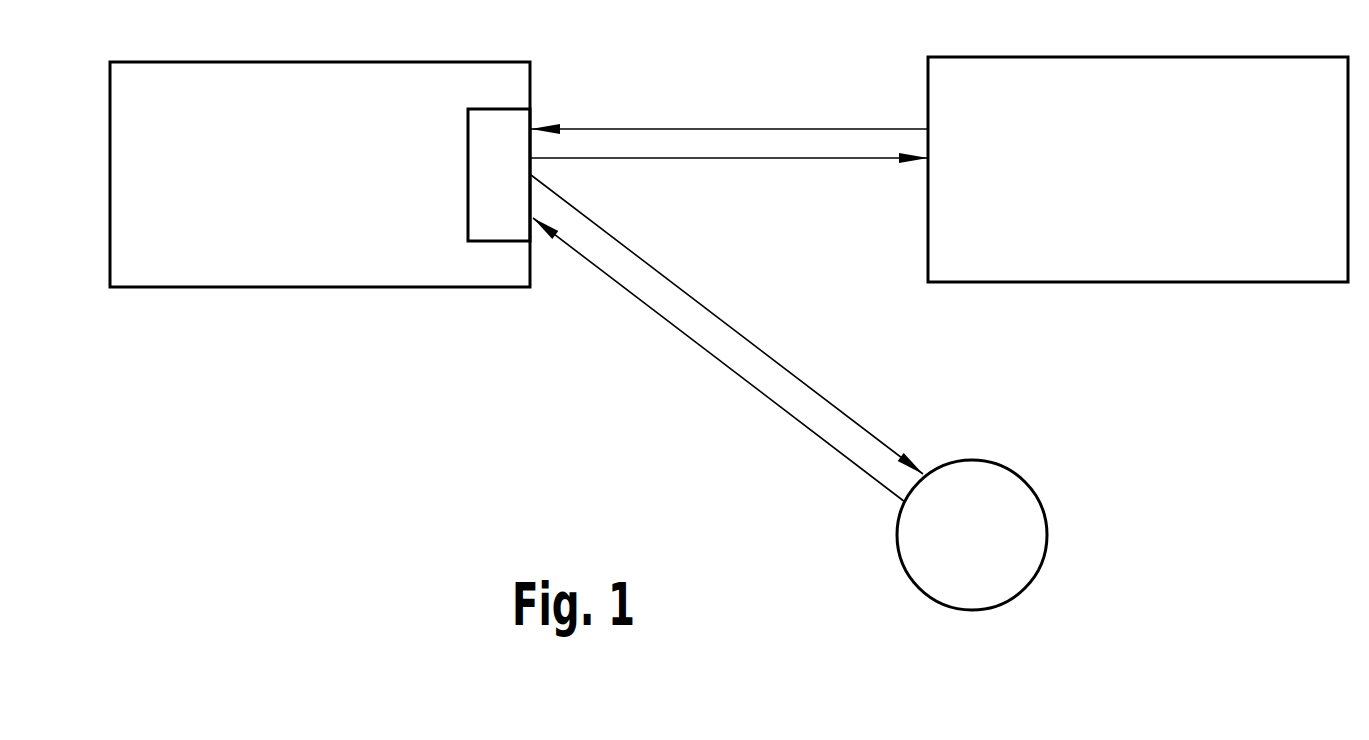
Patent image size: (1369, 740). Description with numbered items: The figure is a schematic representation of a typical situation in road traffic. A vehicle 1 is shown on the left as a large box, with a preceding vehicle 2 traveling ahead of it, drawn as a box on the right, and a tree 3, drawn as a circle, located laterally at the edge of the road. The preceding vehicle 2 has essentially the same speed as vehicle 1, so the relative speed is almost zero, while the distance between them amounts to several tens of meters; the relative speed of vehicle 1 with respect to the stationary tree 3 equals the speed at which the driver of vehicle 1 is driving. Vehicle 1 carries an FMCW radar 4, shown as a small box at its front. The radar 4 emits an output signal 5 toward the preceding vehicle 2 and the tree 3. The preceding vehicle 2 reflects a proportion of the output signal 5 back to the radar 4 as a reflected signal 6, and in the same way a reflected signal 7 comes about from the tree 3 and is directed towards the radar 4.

The vehicle 1 is at (312, 188).
The preceding vehicle 2 is at (1129, 184).
The tree 3 is at (962, 553).
The FMCW radar 4 is at (490, 188).
The output signal 5 is at (738, 160).
The reflected signal 6 is at (740, 128).
The reflected signal 7 is at (730, 370).